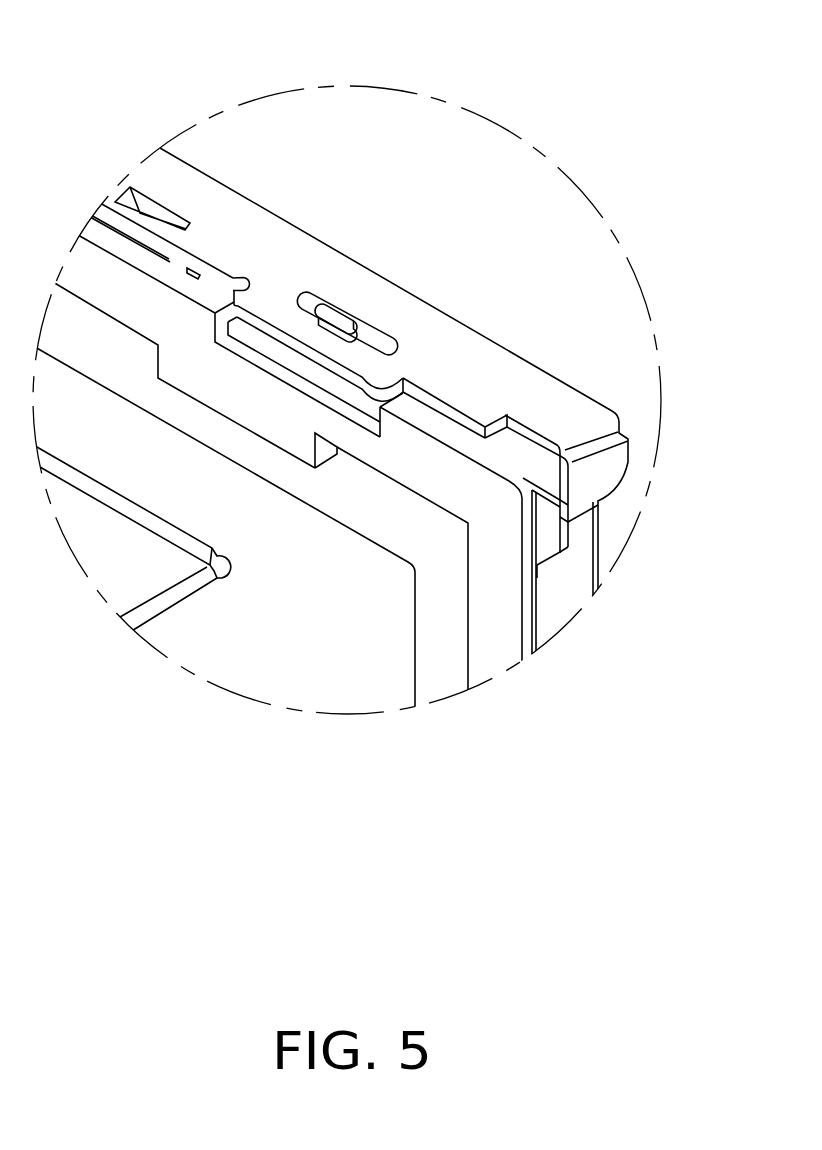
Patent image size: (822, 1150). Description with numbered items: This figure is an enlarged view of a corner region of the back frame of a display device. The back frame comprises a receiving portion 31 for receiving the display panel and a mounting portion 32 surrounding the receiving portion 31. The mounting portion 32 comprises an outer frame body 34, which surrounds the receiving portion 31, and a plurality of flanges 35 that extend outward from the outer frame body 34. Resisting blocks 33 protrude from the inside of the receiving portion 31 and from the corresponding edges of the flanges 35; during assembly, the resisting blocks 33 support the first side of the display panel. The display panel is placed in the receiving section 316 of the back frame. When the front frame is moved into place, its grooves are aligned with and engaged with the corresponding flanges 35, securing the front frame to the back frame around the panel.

The receiving portion 31 is at (477, 502).
The mounting portion 32 is at (237, 193).
The resisting blocks 33 is at (322, 453).
The outer frame body 34 is at (523, 388).
The flanges 35 is at (332, 317).
The receiving section 316 is at (342, 465).